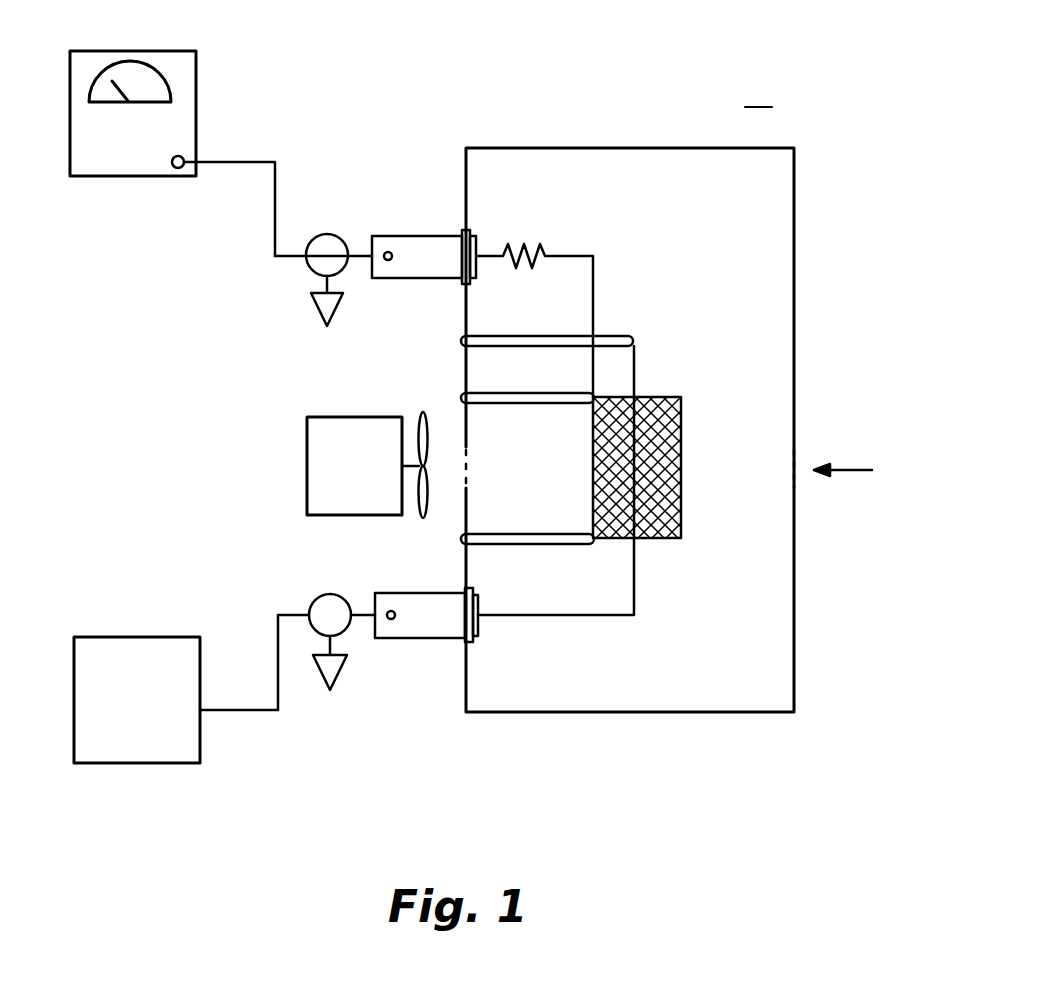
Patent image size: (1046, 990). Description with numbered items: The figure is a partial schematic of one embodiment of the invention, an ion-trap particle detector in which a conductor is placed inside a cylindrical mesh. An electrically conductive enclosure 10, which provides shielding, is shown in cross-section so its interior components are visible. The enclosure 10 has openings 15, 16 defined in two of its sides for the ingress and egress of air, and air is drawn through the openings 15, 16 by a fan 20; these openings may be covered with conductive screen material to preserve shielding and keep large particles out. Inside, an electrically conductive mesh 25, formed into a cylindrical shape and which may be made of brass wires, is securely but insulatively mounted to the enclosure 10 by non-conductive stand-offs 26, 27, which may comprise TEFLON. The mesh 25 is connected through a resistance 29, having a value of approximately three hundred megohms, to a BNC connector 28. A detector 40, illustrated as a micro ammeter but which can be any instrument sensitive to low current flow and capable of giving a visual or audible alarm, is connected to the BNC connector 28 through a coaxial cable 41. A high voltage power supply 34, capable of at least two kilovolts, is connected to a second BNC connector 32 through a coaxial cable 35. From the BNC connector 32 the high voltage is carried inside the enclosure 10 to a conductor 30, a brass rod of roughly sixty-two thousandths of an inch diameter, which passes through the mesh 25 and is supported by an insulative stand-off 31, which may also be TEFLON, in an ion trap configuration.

The enclosure 10 is at (527, 143).
The opening 15 is at (800, 453).
The opening 16 is at (467, 468).
The fan 20 is at (307, 466).
The electrically conductive mesh 25 is at (682, 449).
The non-conductive stand-off 26 is at (557, 532).
The non-conductive stand-off 27 is at (556, 407).
The BNC connector 28 is at (421, 232).
The resistance 29 is at (522, 250).
The conductor 30 is at (636, 588).
The insulative stand-off 31 is at (615, 337).
The BNC connector 32 is at (435, 640).
The high voltage power supply 34 is at (158, 765).
The coaxial cable 35 is at (277, 632).
The detector 40 is at (423, 92).
The coaxial cable 41 is at (258, 160).